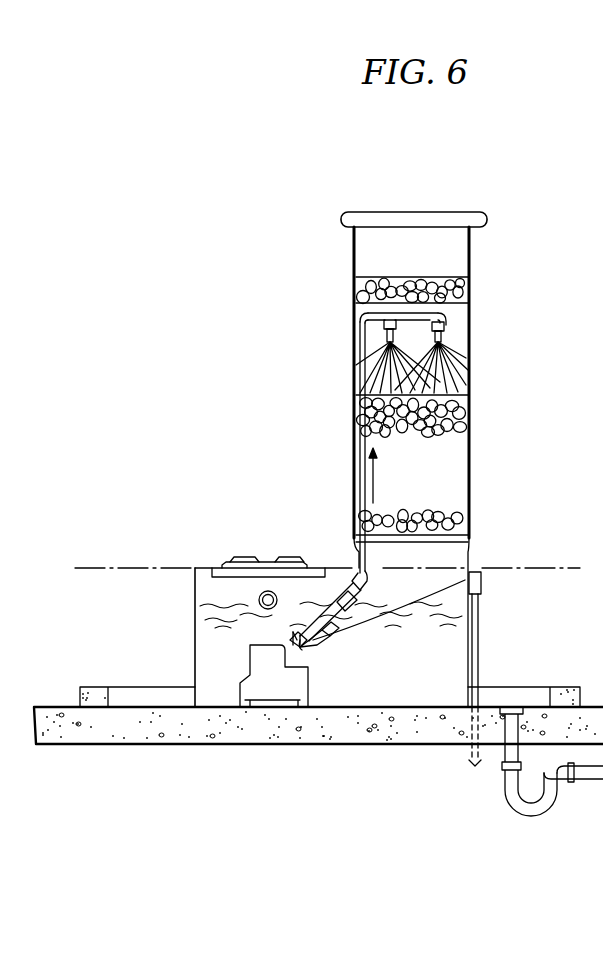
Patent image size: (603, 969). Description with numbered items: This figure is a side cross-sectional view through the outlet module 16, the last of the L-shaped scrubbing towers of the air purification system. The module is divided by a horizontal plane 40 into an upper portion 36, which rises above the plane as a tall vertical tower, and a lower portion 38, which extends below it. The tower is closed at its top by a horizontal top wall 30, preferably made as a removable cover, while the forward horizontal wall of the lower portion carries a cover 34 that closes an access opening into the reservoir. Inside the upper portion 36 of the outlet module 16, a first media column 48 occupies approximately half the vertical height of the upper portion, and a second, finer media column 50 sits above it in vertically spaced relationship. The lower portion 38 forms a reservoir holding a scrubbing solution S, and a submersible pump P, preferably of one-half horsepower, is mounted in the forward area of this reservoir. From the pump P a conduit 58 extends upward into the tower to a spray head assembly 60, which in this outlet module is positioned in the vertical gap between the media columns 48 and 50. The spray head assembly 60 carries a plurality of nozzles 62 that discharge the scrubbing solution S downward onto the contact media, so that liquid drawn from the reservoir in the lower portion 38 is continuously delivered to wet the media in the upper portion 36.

The outlet module 16 is at (336, 208).
The horizontal top wall 30 is at (400, 215).
The second media column 50 is at (463, 283).
The spray head assembly 60 is at (445, 323).
The nozzles 62 is at (382, 333).
The first media column 48 is at (464, 401).
The conduit 58 is at (360, 479).
The upper portion 36 is at (226, 495).
The horizontal plane 40 is at (103, 568).
The lower portion 38 is at (179, 621).
The cover 34 is at (268, 568).
The submersible pump P is at (295, 687).
The scrubbing solution S is at (368, 612).